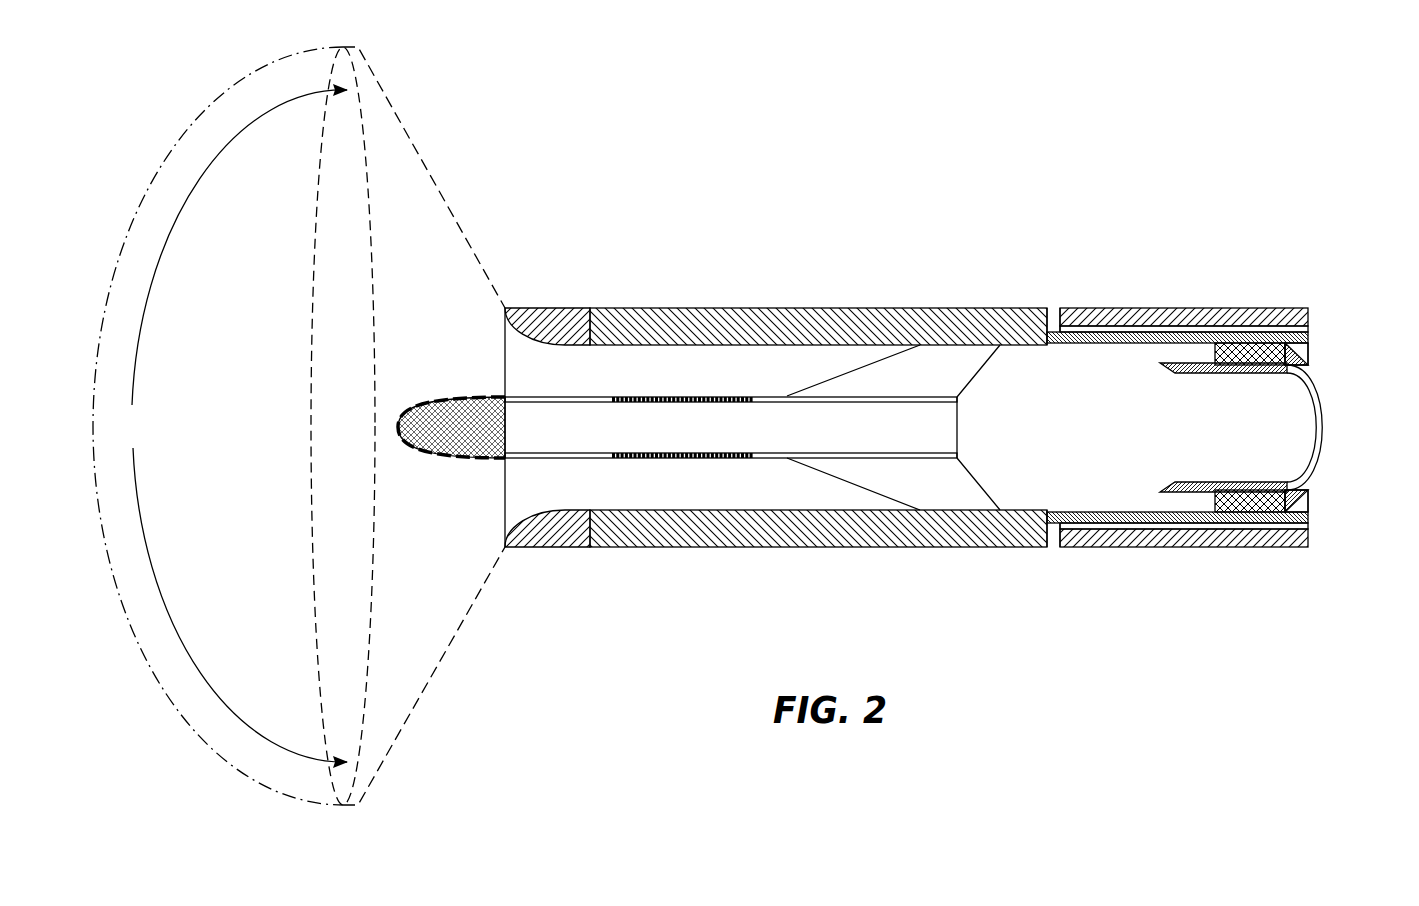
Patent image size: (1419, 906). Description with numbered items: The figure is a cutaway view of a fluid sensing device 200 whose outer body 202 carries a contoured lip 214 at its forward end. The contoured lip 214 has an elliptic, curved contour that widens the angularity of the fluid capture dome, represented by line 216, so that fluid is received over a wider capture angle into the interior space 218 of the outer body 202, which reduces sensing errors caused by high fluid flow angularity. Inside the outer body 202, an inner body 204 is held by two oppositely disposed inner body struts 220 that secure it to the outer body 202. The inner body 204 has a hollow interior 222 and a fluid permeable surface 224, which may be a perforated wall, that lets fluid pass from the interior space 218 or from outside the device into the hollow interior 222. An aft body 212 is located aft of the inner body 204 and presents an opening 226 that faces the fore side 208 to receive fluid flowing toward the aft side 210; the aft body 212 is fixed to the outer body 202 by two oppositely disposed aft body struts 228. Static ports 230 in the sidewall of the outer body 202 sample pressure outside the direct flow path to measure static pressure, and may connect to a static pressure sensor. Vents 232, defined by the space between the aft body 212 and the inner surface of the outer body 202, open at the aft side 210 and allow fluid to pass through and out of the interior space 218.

The fluid sensing device 200 is at (1013, 172).
The outer body 202 is at (878, 314).
The inner body 204 is at (593, 455).
The fore side 208 is at (505, 547).
The aft side 210 is at (1293, 540).
The aft body 212 is at (1195, 362).
The contoured lip 214 is at (555, 312).
The line representing fluid capture dome 216 is at (363, 120).
The interior space 218 is at (752, 360).
The inner body struts 220 is at (960, 492).
The hollow interior 222 is at (727, 427).
The fluid permeable surface 224 is at (690, 393).
The opening 226 is at (1175, 418).
The aft body struts 228 is at (1250, 355).
The static ports 230 is at (1052, 315).
The vents 232 is at (1305, 358).